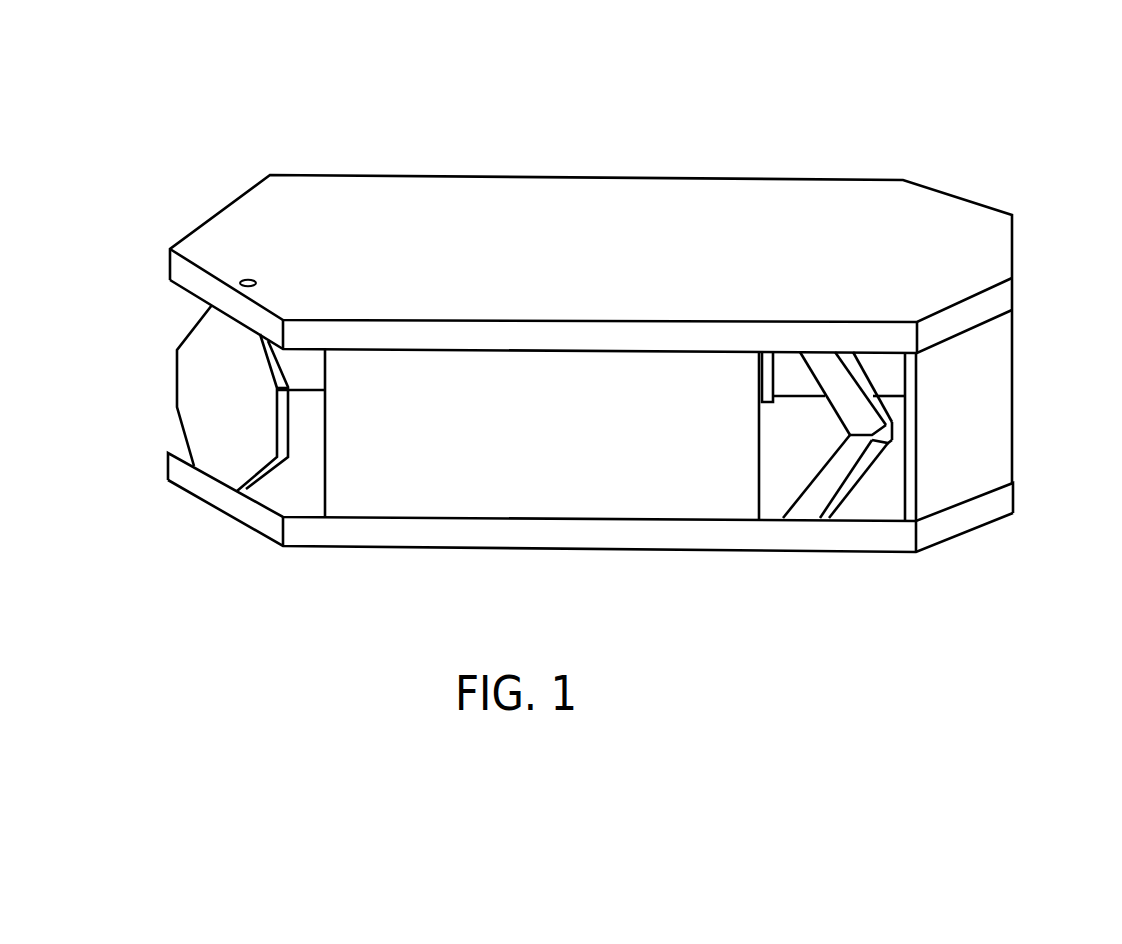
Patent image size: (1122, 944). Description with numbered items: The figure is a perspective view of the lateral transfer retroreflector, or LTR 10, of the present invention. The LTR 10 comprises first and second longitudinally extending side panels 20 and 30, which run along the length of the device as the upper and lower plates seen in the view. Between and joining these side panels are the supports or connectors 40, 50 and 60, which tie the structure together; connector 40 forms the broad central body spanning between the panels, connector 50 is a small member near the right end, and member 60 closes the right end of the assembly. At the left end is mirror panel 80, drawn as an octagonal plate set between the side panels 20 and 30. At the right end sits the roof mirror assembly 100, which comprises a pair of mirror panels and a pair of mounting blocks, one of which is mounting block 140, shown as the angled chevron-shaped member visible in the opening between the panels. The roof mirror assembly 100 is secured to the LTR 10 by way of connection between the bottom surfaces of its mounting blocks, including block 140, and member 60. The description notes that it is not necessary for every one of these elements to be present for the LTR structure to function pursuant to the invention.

The lateral transfer retroreflector 10 is at (688, 86).
The first side panel 20 is at (976, 229).
The second side panel 30 is at (997, 503).
The support or connector 40 is at (662, 487).
The support or connector 50 is at (767, 378).
The support or connector 60 is at (997, 388).
The mirror panel 80 is at (190, 402).
The roof mirror assembly 100 is at (797, 535).
The mounting block 140 is at (876, 500).